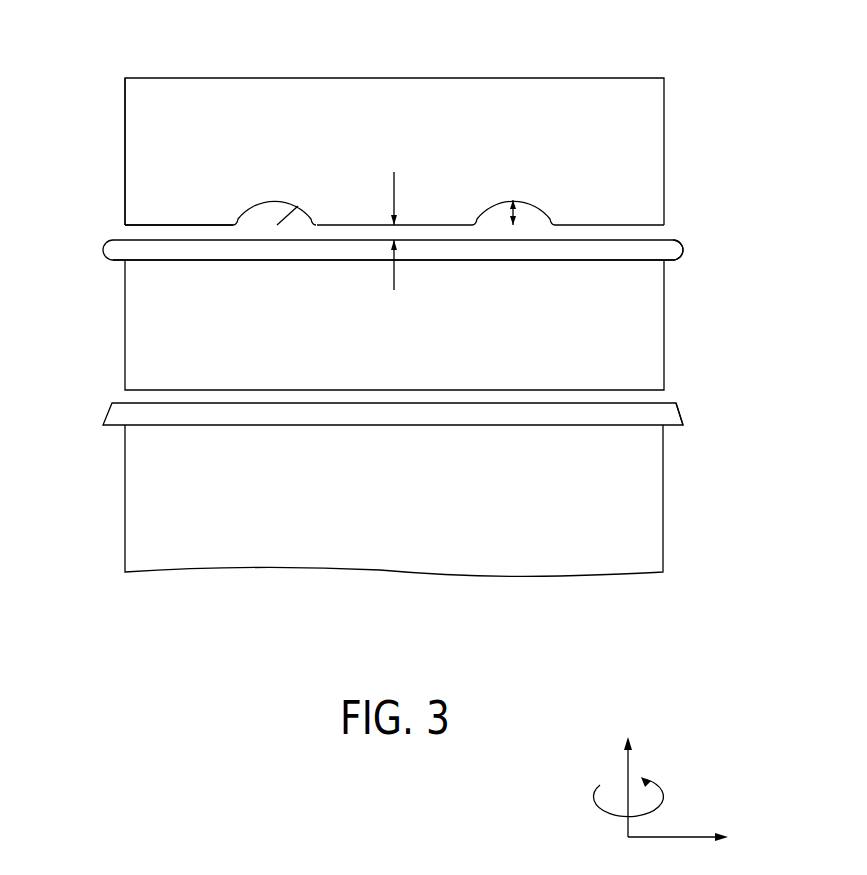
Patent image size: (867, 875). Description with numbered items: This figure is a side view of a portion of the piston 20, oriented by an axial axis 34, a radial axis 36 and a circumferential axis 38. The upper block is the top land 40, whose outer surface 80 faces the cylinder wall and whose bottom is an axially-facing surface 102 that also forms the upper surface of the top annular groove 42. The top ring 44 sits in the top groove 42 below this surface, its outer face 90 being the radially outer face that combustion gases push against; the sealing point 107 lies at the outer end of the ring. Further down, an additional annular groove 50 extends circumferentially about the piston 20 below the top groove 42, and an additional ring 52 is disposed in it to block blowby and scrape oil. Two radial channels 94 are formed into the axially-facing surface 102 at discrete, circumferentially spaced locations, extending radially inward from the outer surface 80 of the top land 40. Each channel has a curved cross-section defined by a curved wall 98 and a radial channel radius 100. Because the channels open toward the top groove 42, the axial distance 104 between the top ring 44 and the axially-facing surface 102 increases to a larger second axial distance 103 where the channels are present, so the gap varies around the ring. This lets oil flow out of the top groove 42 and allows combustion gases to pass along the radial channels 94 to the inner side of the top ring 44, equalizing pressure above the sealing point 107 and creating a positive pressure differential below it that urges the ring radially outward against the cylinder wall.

The piston 20 is at (620, 40).
The top land 40 is at (652, 112).
The outer surface 80 is at (125, 151).
The top annular groove 42 is at (660, 232).
The axially-facing surface 102 is at (140, 227).
The radial channels 94 is at (542, 208).
The curved wall 98 is at (273, 202).
The radial channel radius 100 is at (298, 211).
The axial distance 104 is at (397, 190).
The second axial distance 103 is at (511, 228).
The top ring 44 is at (118, 256).
The sealing point 107 is at (685, 249).
The outer face 90 is at (684, 262).
The additional annular grooves 50 is at (128, 396).
The additional rings 52 is at (673, 418).
The axial axis 34 is at (628, 769).
The radial axis 36 is at (672, 838).
The circumferential axis 38 is at (660, 805).